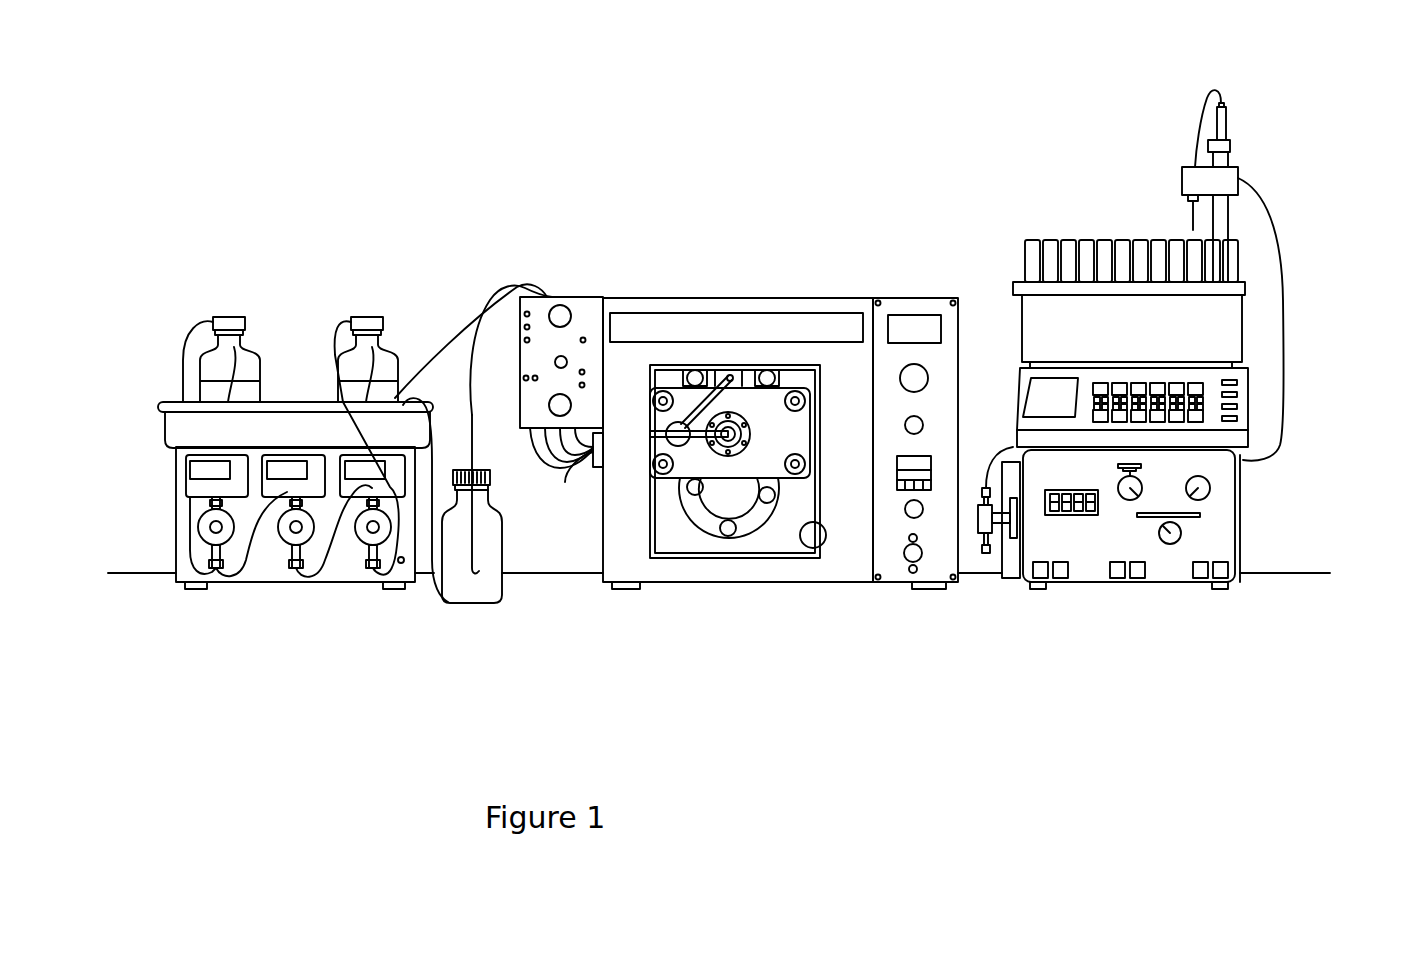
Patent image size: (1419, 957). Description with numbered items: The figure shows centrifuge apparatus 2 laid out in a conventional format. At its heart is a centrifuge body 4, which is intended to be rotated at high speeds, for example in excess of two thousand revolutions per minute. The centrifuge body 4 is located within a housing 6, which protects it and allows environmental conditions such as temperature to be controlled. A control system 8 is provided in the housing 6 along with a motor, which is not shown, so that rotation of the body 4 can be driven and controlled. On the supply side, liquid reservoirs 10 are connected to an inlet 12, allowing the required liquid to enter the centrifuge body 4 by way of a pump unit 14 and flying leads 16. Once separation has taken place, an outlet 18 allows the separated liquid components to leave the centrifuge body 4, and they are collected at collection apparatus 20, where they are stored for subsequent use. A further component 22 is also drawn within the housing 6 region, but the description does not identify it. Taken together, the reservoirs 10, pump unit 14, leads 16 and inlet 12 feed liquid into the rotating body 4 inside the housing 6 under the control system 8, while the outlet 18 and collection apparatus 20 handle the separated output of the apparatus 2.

The centrifuge apparatus 2 is at (784, 670).
The centrifuge body 4 is at (752, 398).
The housing 6 is at (837, 358).
The control system 8 is at (937, 560).
The liquid reservoirs 10 is at (246, 322).
The inlet 12 is at (548, 297).
The pump unit 14 is at (585, 310).
The flying leads 16 is at (592, 460).
The outlet 18 is at (986, 553).
The collection apparatus 20 is at (1222, 482).
The valve mounting panel 22 is at (672, 535).